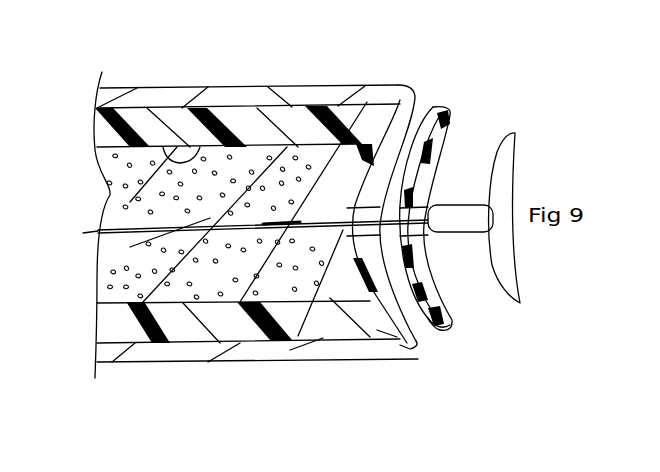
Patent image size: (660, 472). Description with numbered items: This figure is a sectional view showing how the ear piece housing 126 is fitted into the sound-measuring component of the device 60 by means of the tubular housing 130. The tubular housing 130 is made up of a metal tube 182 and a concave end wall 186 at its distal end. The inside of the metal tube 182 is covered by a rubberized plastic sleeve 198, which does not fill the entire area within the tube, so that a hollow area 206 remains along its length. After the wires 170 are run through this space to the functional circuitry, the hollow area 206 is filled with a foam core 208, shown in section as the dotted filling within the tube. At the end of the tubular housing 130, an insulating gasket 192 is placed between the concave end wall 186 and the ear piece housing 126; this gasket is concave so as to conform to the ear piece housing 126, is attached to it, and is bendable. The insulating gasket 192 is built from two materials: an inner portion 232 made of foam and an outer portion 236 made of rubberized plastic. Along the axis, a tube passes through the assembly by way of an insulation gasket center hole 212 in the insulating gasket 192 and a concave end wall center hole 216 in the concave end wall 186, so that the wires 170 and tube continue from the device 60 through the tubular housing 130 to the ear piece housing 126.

The catheter body 60 is at (236, 76).
The metal tube 182 is at (262, 88).
The hollow area 206 is at (173, 158).
The tubular housing 130 is at (383, 80).
The rubberized plastic sleeve 198 is at (418, 347).
The concave end wall center hole 216 is at (300, 332).
The concave end wall 186 is at (423, 107).
The inner portion 232 is at (430, 288).
The insulating gasket 192 is at (450, 111).
The outer portion 236 is at (438, 333).
The insulation gasket center hole 212 is at (432, 203).
The ear piece housing 126 is at (517, 130).
The wires 170 is at (133, 230).
The foam core 208 is at (130, 243).